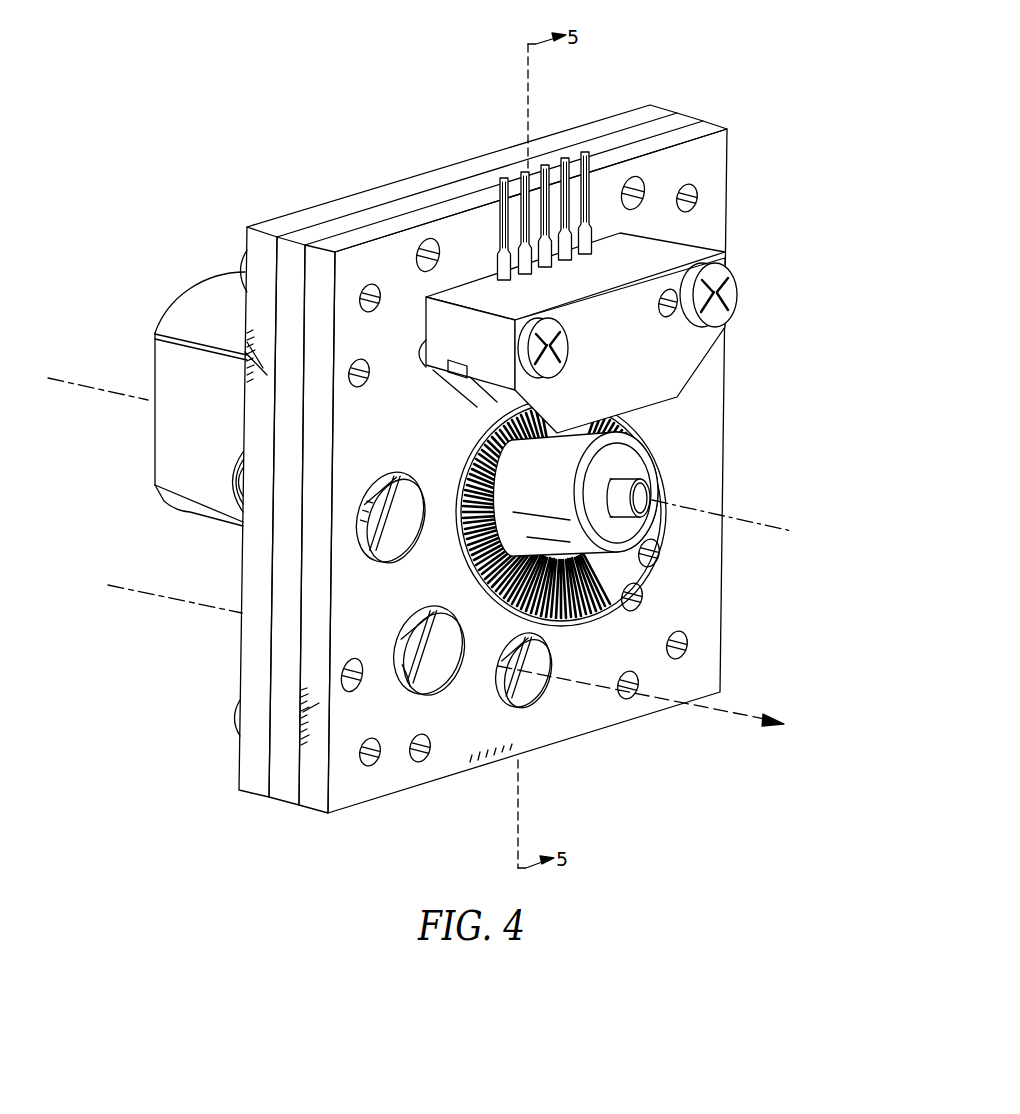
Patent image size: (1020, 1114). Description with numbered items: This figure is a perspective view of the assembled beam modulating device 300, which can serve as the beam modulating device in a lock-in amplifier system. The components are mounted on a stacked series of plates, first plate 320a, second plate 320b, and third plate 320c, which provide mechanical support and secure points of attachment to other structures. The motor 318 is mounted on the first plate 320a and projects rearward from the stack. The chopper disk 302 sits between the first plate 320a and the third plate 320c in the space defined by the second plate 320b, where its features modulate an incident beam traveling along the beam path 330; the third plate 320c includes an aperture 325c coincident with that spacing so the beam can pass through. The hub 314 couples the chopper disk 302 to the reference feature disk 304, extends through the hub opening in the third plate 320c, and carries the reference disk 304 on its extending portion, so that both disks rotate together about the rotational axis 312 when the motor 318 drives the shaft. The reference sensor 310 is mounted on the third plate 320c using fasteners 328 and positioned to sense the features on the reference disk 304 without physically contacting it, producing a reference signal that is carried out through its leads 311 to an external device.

The beam modulating device 300 is at (805, 256).
The chopper disk 302 is at (414, 661).
The reference feature disk 304 is at (463, 556).
The reference sensor 310 is at (680, 244).
The leads 311 is at (504, 176).
The rotational axis 312 is at (763, 521).
The hub 314 is at (652, 464).
The motor 318 is at (185, 437).
The first plate 320a is at (652, 108).
The second plate 320b is at (679, 120).
The third plate 320c is at (704, 130).
The aperture 325c is at (544, 670).
The fasteners 328 is at (735, 303).
The beam path 330 is at (743, 712).